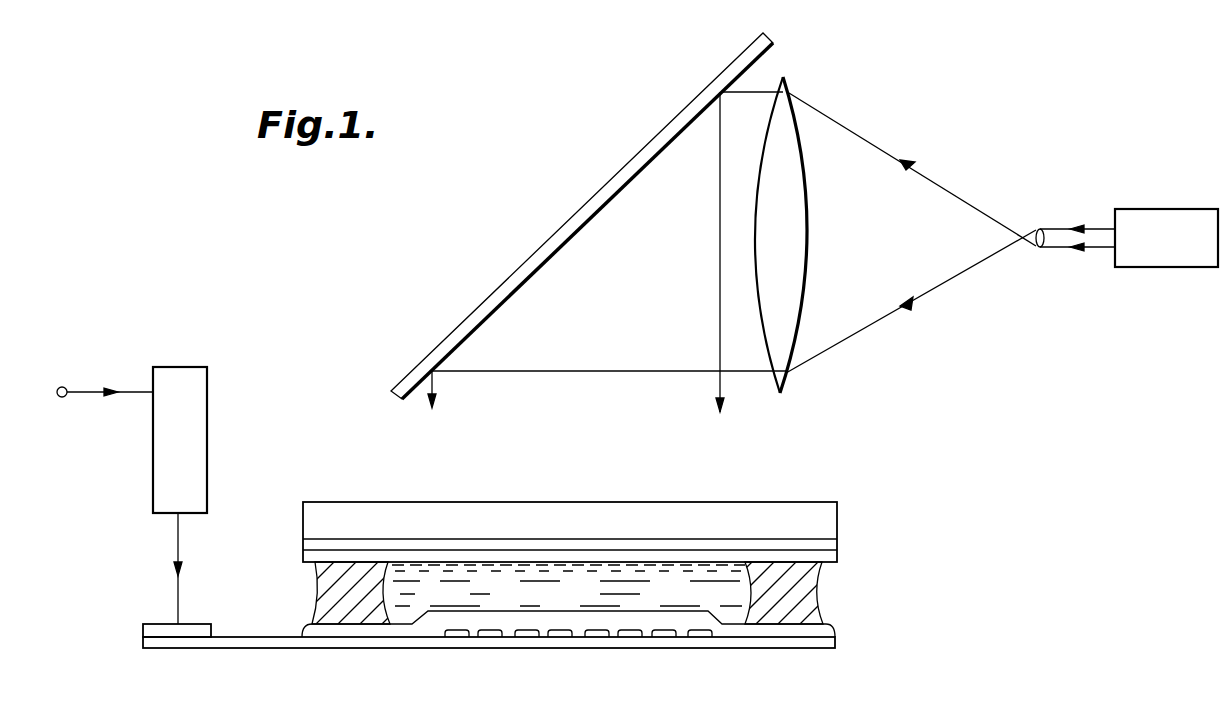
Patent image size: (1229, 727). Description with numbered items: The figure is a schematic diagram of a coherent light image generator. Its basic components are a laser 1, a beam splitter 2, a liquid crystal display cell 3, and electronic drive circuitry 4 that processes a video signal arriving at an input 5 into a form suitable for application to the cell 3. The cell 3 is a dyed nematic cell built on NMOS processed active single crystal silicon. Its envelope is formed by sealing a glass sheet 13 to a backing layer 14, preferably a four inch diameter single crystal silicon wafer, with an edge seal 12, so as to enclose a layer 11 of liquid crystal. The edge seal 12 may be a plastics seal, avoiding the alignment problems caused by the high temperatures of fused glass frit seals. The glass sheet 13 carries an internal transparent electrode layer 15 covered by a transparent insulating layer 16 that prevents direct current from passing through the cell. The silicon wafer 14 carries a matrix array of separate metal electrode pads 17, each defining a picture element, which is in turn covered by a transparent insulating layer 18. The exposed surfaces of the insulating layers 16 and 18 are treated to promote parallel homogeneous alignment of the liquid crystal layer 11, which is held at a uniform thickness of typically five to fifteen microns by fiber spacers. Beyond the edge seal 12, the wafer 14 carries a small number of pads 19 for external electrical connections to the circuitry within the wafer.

The laser 1 is at (1161, 217).
The beam splitter 2 is at (403, 386).
The liquid crystal display cell 3 is at (825, 593).
The electronic drive circuitry 4 is at (190, 379).
The input 5 is at (68, 387).
The layer of liquid crystal 11 is at (657, 578).
The edge seal 12 is at (783, 578).
The glass sheet 13 is at (823, 523).
The backing layer 14 is at (657, 644).
The transparent electrode layer 15 is at (332, 545).
The transparent insulating layer 16 is at (478, 552).
The metal electrode pads 17 is at (452, 634).
The transparent insulating layer 18 is at (562, 635).
The pads 19 is at (159, 630).